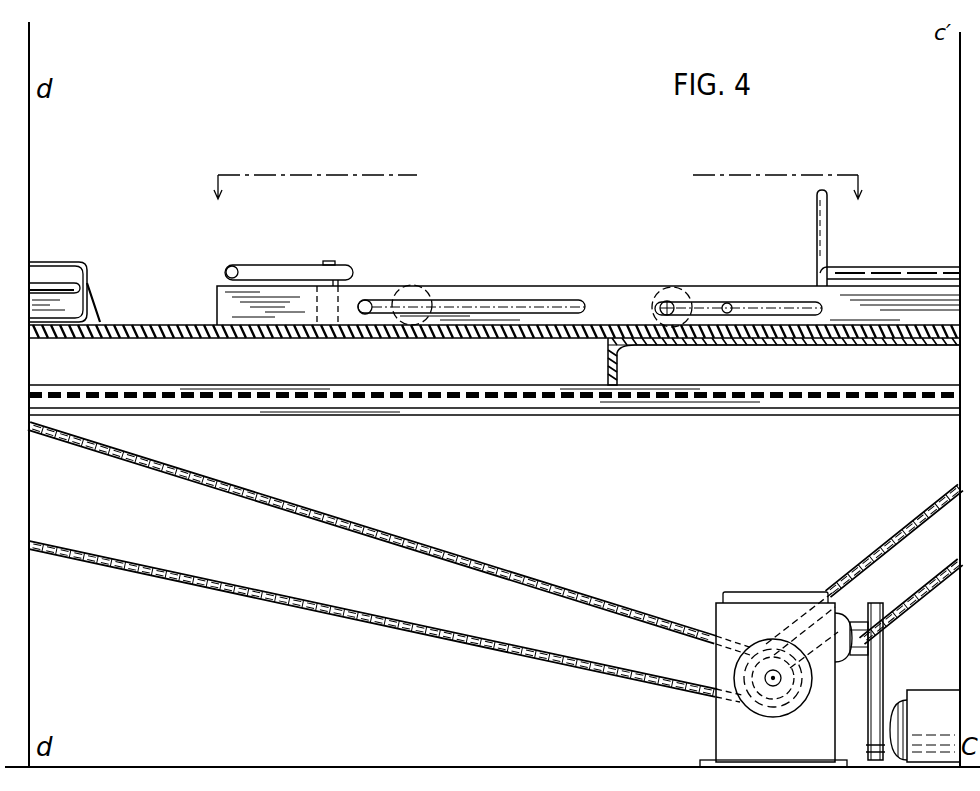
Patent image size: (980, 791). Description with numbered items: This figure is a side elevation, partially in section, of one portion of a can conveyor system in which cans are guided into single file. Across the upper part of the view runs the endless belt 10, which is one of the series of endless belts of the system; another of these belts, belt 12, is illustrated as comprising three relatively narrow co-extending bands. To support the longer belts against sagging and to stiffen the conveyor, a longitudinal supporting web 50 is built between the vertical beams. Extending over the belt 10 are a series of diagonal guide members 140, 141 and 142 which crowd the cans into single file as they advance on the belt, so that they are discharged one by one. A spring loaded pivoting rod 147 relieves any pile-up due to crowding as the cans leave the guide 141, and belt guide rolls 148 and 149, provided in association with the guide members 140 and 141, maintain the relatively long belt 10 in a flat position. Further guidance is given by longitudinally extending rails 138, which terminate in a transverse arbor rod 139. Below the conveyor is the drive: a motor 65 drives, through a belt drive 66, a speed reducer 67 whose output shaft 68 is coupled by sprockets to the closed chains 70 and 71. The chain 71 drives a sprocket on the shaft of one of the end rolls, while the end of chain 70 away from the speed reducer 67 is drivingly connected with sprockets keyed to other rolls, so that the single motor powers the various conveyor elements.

The endless belt 10 is at (120, 326).
The endless belt 12 is at (534, 204).
The longitudinal supporting web 50 is at (843, 347).
The motor 65 is at (937, 698).
The belt drive 66 is at (876, 688).
The speed reducer 67 is at (716, 718).
The output shaft 68 is at (775, 690).
The closed chain 70 is at (516, 653).
The closed chain 71 is at (897, 539).
The longitudinally extending rail 138 is at (877, 267).
The transverse arbor rod 139 is at (817, 194).
The diagonal guide member 140 is at (705, 302).
The diagonal guide member 141 is at (482, 300).
The diagonal guide member 142 is at (60, 289).
The spring loaded pivoting rod 147 is at (258, 267).
The belt guide roll 148 is at (651, 298).
The belt guide roll 149 is at (409, 290).